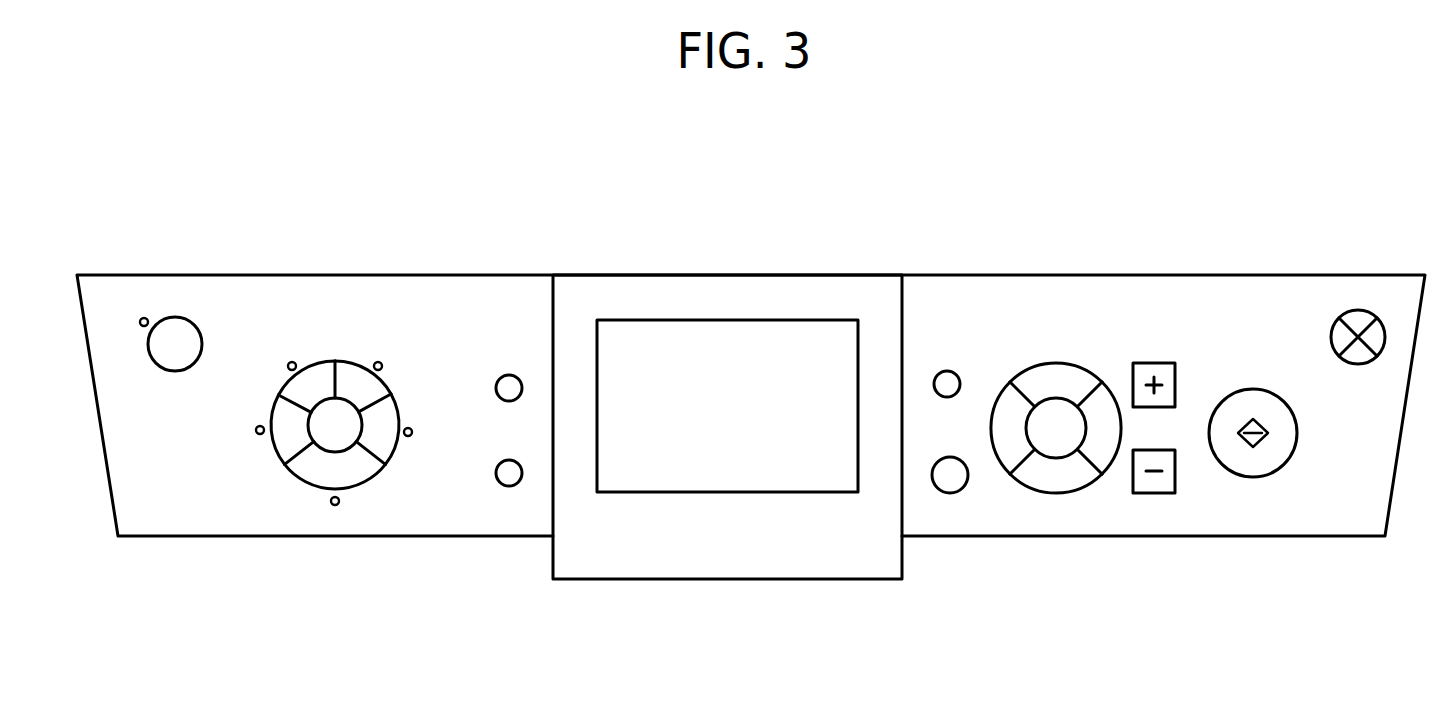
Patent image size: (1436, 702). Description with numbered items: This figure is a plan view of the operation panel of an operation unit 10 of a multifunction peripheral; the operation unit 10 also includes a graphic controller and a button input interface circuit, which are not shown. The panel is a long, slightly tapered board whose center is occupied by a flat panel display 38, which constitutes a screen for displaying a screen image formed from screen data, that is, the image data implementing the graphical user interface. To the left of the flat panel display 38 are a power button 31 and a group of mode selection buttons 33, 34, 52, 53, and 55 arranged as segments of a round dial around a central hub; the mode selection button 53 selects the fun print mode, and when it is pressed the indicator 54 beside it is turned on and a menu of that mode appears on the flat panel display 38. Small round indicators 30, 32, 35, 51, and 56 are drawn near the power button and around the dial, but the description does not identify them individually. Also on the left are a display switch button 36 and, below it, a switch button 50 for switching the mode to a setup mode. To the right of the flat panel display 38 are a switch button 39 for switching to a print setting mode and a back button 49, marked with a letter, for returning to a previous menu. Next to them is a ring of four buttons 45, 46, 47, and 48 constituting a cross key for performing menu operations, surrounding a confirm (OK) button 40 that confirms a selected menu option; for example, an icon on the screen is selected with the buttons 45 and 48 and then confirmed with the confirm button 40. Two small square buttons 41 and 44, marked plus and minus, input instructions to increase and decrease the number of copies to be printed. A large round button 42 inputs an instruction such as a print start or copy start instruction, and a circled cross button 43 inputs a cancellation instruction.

The operation unit 10 is at (1117, 216).
The indicator light 30 is at (144, 318).
The power button 31 is at (183, 342).
The indicator light 32 is at (291, 362).
The mode selection button 33 is at (316, 382).
The mode selection button 34 is at (354, 378).
The indicator light 35 is at (378, 362).
The display switch button 36 is at (510, 387).
The flat panel display 38 is at (683, 340).
The switch button 39 is at (947, 371).
The confirm (OK) button 40 is at (1050, 412).
The button 41 is at (1155, 363).
The button 42 is at (1252, 400).
The button 43 is at (1358, 324).
The button 44 is at (1156, 494).
The button 45 is at (1107, 443).
The button 46 is at (1055, 480).
The button 47 is at (1068, 373).
The button 48 is at (1006, 443).
The back button 49 is at (948, 493).
The switch button 50 is at (508, 475).
The indicator light 51 is at (408, 437).
The mode selection button 52 is at (387, 443).
The mode selection button 53 is at (357, 474).
The indicator 54 is at (335, 505).
The mode selection button 55 is at (287, 448).
The indicator light 56 is at (260, 434).